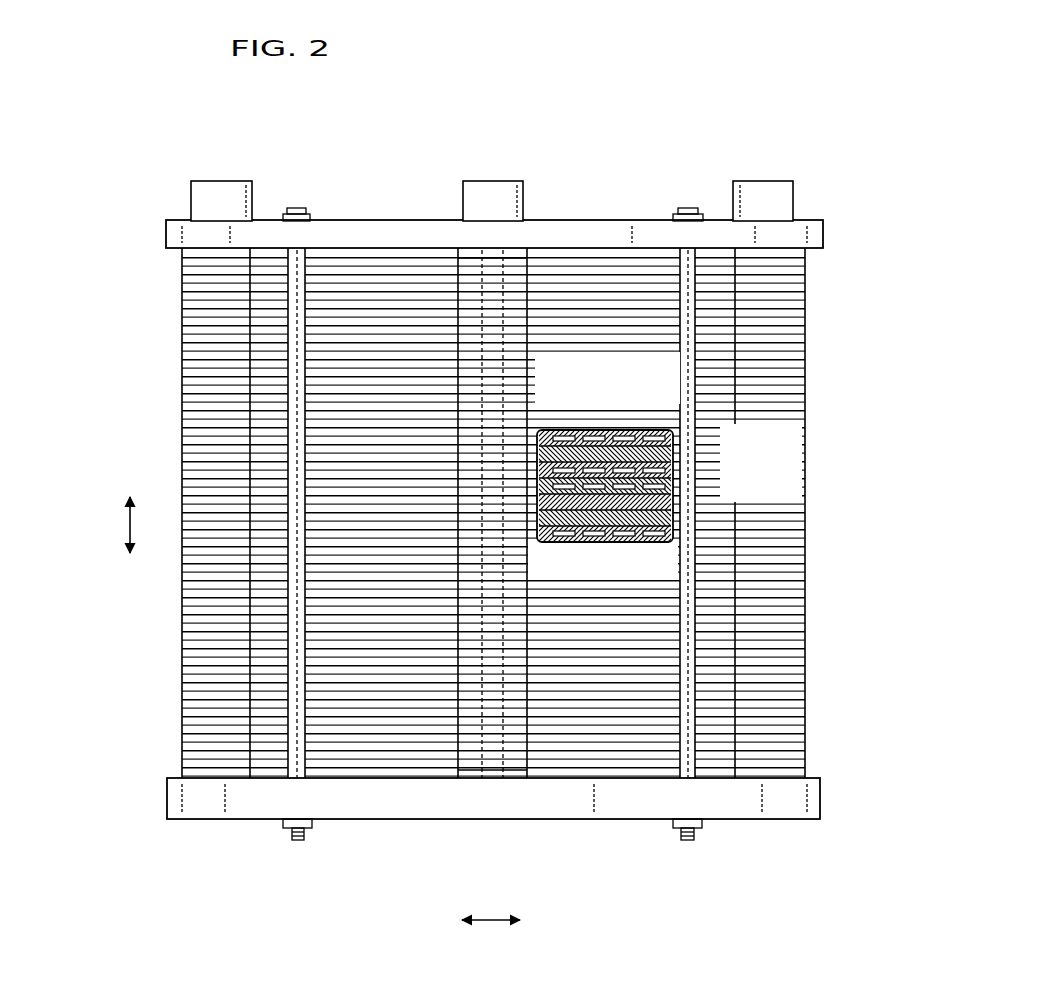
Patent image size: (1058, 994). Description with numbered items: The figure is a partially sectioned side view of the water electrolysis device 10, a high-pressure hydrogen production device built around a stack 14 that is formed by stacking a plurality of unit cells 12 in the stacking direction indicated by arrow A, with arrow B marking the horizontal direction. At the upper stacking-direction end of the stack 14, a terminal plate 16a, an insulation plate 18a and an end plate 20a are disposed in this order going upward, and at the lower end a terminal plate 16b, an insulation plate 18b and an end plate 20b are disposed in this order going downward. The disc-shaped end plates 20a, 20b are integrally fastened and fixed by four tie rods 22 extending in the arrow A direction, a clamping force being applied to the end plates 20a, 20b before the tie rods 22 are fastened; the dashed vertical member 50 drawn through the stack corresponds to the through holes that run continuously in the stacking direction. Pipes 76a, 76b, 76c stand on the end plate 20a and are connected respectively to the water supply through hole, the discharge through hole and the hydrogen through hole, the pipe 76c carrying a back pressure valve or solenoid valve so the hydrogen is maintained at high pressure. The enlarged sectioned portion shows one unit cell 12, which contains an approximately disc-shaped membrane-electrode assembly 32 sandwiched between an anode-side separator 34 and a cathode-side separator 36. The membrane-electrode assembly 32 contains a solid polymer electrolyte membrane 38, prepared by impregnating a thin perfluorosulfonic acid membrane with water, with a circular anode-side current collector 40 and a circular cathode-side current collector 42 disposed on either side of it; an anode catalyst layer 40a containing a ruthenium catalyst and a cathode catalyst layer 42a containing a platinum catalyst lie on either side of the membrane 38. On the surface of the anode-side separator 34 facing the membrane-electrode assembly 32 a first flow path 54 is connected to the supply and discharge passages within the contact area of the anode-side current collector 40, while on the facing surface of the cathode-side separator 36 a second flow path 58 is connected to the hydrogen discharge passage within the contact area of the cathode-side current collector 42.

The water electrolysis device 10 is at (668, 117).
The unit cell 12 is at (180, 617).
The stack 14 is at (120, 633).
The terminal plate 16a is at (655, 260).
The terminal plate 16b is at (405, 768).
The insulation plate 18a is at (600, 252).
The insulation plate 18b is at (356, 778).
The end plate 20a is at (338, 221).
The end plate 20b is at (780, 822).
The tie rod 22 is at (297, 772).
The membrane-electrode assembly 32 is at (753, 427).
The anode-side separator 34 is at (602, 532).
The cathode-side separator 36 is at (578, 430).
The solid polymer electrolyte membrane 38 is at (672, 461).
The anode-side current collector 40 is at (667, 472).
The anode catalyst layer 40a is at (562, 538).
The cathode-side current collector 42 is at (672, 450).
The cathode catalyst layer 42a is at (553, 432).
The connecting member 50 is at (490, 780).
The first flow path 54 is at (605, 548).
The second flow path 58 is at (651, 430).
The pipe 76a is at (205, 192).
The pipe 76b is at (788, 200).
The pipe 76c is at (476, 187).